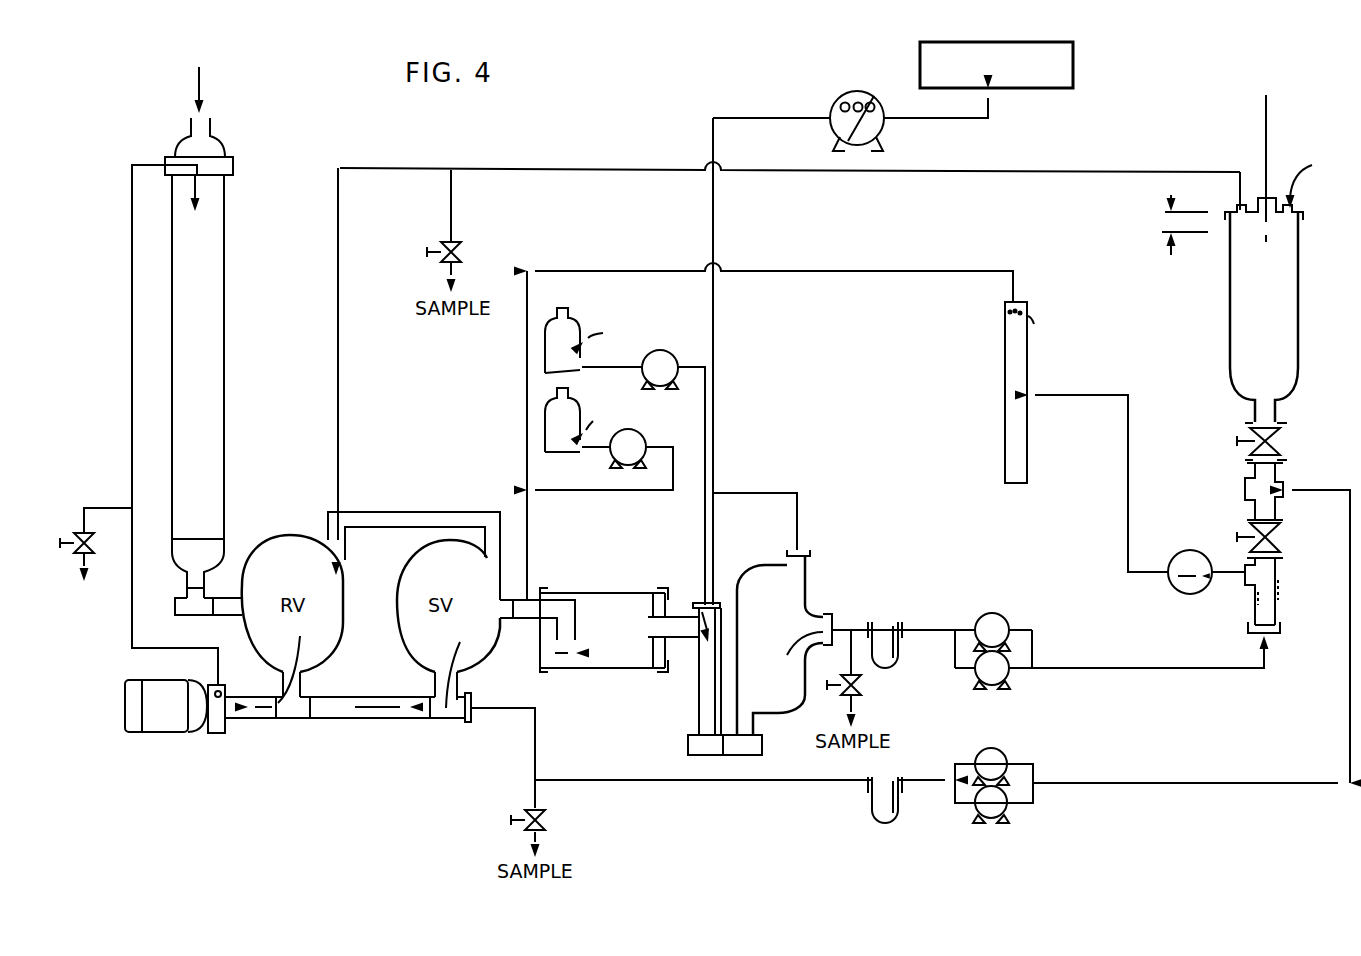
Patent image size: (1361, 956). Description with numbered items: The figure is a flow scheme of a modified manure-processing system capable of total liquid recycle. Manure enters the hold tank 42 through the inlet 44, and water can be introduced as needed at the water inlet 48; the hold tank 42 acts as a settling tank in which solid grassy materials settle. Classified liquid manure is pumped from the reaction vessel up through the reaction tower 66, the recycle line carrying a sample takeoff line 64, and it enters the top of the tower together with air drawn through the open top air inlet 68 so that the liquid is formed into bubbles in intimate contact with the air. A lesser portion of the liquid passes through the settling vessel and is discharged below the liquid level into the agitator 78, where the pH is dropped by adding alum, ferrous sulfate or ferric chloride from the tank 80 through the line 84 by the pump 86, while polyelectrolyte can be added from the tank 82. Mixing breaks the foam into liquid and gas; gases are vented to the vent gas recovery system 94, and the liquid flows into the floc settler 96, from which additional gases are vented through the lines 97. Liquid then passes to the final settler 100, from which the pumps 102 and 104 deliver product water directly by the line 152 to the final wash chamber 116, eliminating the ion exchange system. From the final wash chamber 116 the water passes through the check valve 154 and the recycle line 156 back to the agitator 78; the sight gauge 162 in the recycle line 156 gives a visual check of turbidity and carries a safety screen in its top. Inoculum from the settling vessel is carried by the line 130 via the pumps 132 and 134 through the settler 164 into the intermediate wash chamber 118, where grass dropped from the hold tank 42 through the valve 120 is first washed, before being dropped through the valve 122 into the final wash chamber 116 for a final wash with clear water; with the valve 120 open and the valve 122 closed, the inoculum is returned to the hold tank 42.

The hold tank 42 is at (1298, 360).
The inlet 44 is at (1272, 124).
The water inlet 48 is at (1300, 178).
The sample takeoff line 64 is at (103, 508).
The reaction tower 66 is at (224, 345).
The open top air inlet 68 is at (212, 136).
The agitator 78 is at (628, 567).
The tank 80 is at (578, 410).
The tank 82 is at (577, 322).
The line 84 is at (628, 492).
The pump 86 is at (660, 386).
The vent gas recovery system 94 is at (1075, 58).
The floc settler 96 is at (766, 562).
The lines 97 is at (770, 492).
The final settler 100 is at (898, 660).
The pump 102 is at (1000, 614).
The pump 104 is at (995, 687).
The final wash chamber 116 is at (1278, 608).
The intermediate wash chamber 118 is at (1255, 510).
The valve 120 is at (1270, 445).
The valve 122 is at (1268, 540).
The line 130 is at (1232, 784).
The pump 132 is at (1003, 750).
The pump 134 is at (990, 819).
The line 152 is at (965, 592).
The check valve 154 is at (1168, 585).
The recycle line 156 is at (850, 271).
The sight gauge 162 is at (1004, 428).
The settler 164 is at (890, 815).